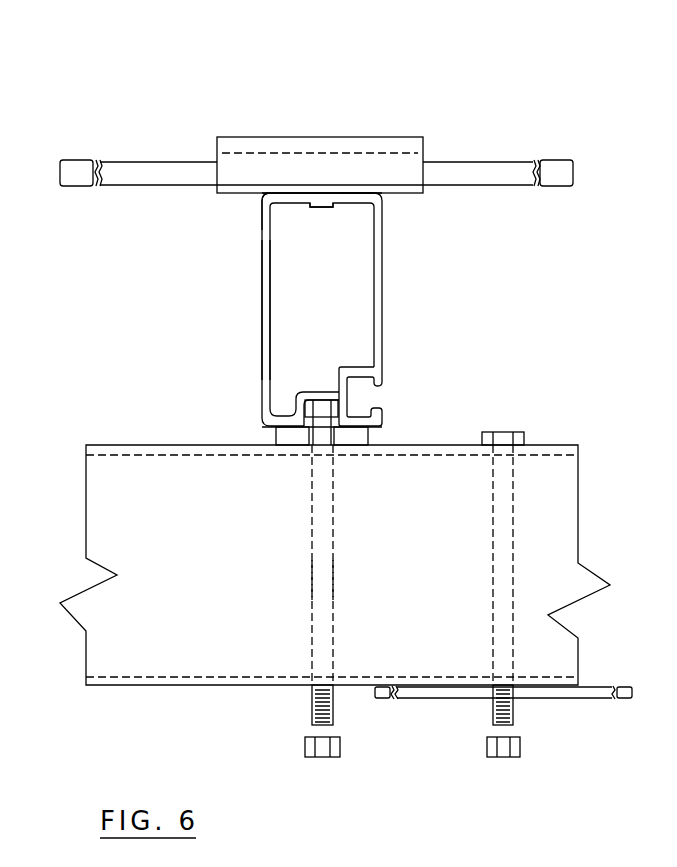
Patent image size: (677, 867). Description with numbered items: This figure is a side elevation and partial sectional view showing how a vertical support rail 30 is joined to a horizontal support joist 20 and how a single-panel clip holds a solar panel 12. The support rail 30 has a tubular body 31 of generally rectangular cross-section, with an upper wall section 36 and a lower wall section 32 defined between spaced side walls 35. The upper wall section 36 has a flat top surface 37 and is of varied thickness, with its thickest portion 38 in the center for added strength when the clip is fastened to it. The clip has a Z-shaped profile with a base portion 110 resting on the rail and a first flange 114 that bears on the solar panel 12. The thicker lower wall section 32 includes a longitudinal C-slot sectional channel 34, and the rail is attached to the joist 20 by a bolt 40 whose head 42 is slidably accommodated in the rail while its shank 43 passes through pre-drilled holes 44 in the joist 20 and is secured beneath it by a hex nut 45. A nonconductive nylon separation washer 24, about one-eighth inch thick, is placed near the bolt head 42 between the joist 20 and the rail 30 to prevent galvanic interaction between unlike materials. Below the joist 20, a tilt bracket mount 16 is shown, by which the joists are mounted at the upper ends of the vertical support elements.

The solar panel 12 is at (490, 160).
The first flange 114 is at (340, 137).
The base portion 110 is at (405, 195).
The support rail 30 is at (385, 329).
The thickest portion 38 is at (320, 200).
The flat top surface 37 is at (349, 195).
The upper wall section 36 is at (238, 221).
The tubular body 31 is at (261, 268).
The side walls 35 is at (271, 303).
The lower wall section 32 is at (239, 401).
The C-slot sectional channel 34 is at (347, 408).
The separation washer 24 is at (355, 435).
The bolt head 42 is at (313, 447).
The pre-drilled holes 44 is at (333, 455).
The bolt 40 is at (336, 543).
The shank 43 is at (306, 577).
The horizontal support joist 20 is at (556, 517).
The tilt bracket mount 16 is at (572, 700).
The nut 45 is at (303, 750).